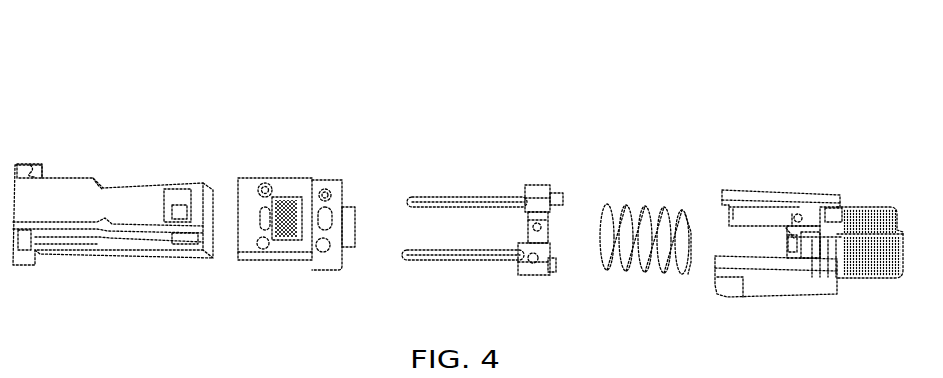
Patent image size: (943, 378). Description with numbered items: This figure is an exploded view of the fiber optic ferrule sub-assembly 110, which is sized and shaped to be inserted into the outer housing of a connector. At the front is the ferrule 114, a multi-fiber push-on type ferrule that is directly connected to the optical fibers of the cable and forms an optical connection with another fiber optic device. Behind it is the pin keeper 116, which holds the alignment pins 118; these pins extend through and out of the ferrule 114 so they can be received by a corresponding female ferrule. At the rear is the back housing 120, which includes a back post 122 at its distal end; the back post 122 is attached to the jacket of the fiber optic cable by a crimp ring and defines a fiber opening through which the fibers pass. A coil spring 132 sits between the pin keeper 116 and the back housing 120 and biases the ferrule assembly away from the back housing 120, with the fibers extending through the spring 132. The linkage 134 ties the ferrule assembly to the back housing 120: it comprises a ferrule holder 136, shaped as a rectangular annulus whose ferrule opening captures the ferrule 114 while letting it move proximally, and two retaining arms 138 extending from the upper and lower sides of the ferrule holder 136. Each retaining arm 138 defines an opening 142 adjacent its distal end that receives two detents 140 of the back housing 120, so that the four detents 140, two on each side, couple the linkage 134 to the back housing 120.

The fiber optic ferrule sub-assembly 110 is at (500, 78).
The ferrule 114 is at (282, 192).
The pin keeper 116 is at (490, 188).
The alignment pins 118 is at (448, 255).
The back housing 120 is at (795, 165).
The back post 122 is at (863, 217).
The spring 132 is at (645, 190).
The linkage 134 is at (113, 143).
The ferrule holder 136 is at (23, 171).
The retaining arms 138 is at (103, 231).
The detents 140 is at (792, 220).
The opening 142 is at (180, 203).